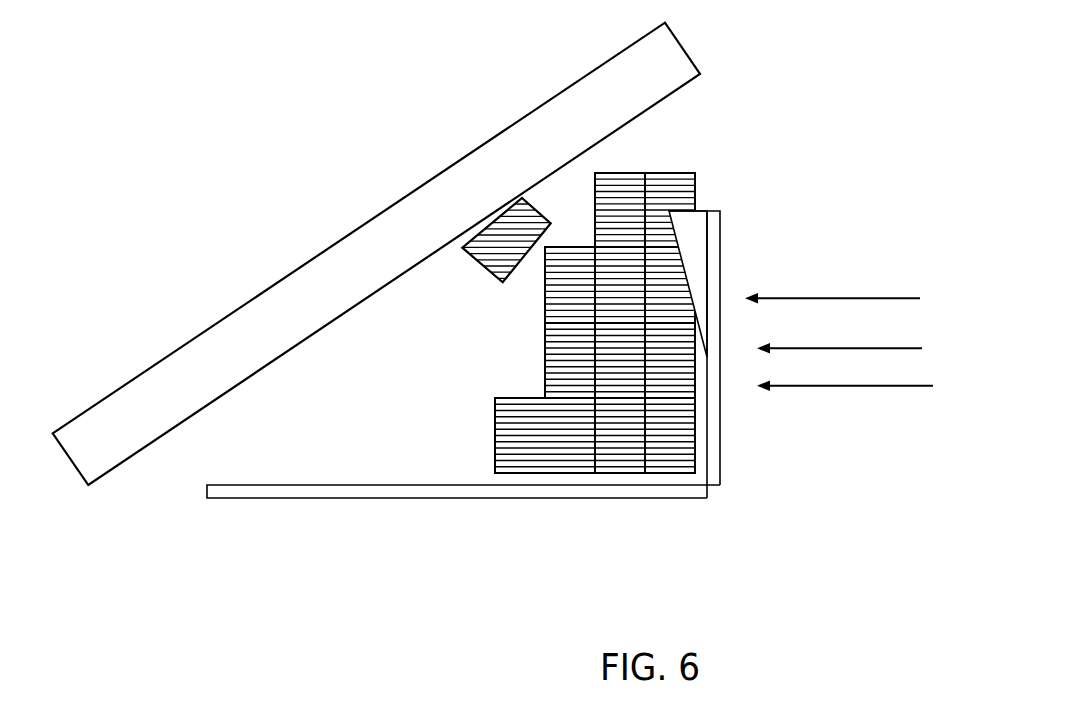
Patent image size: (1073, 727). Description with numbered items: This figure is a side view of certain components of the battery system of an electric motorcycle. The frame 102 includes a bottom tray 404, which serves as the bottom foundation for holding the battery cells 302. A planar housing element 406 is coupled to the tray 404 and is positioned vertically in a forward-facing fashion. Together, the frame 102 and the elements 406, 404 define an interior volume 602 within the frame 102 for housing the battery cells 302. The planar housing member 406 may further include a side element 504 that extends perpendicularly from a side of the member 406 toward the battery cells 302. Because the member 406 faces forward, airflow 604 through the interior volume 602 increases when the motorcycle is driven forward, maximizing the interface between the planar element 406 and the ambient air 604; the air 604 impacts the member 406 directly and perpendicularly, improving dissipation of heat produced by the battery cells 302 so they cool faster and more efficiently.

The frame 102 is at (457, 172).
The battery cells 302 is at (683, 187).
The side element 504 is at (695, 234).
The interior volume 602 is at (483, 334).
The airflow 604 is at (919, 311).
The planar housing element 406 is at (720, 435).
The bottom tray 404 is at (457, 499).